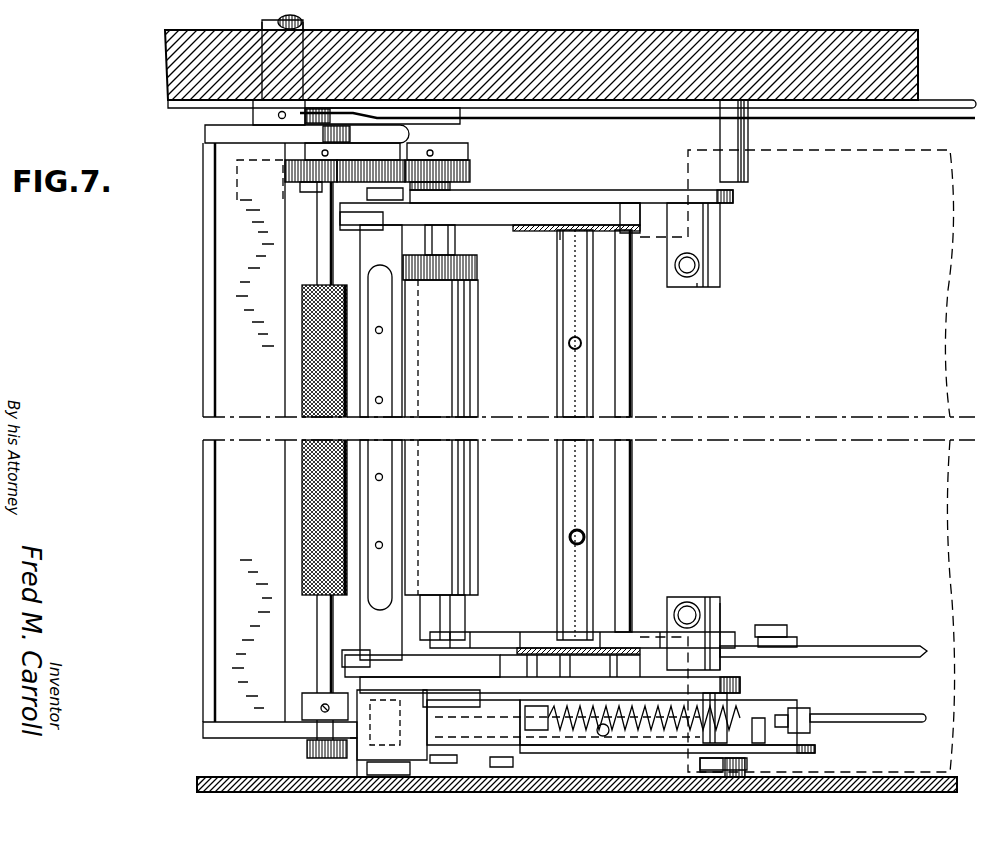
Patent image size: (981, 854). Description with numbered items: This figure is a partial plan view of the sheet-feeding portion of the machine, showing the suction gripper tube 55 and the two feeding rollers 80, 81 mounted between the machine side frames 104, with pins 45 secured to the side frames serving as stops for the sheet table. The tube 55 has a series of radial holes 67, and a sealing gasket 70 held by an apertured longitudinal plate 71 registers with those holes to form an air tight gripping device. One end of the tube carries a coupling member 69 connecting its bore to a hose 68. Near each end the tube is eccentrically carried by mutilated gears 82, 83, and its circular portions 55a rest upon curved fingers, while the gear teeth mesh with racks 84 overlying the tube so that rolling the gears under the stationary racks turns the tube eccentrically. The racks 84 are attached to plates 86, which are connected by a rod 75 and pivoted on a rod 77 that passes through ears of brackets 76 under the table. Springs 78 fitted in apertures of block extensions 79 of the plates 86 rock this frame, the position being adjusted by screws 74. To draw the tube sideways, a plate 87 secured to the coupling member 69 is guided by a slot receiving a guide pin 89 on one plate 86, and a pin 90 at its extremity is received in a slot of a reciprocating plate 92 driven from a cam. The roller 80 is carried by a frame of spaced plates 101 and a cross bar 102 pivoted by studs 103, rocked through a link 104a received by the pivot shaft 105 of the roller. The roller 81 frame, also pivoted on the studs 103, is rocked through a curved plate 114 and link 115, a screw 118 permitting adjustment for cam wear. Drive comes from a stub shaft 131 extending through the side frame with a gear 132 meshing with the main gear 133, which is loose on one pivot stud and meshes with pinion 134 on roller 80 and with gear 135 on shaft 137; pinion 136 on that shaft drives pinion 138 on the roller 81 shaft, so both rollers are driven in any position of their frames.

The pins 45 is at (750, 172).
The suction gripper tube 55 is at (333, 270).
The circular portions 55a is at (365, 195).
The radial holes 67 is at (383, 398).
The hose 68 is at (577, 733).
The coupling member 69 is at (528, 725).
The sealing gasket 70 is at (377, 268).
The longitudinal plate 71 is at (380, 308).
The screws 74 is at (568, 343).
The rod 75 is at (567, 377).
The brackets 76 is at (560, 235).
The rod 77 is at (632, 347).
The springs 78 is at (695, 260).
The block extensions 79 is at (697, 283).
The roller 80 is at (310, 543).
The roller 81 is at (457, 490).
The mutilated gear 82 is at (345, 222).
The mutilated gear 83 is at (345, 660).
The racks 84 is at (512, 205).
The plates 86 is at (553, 205).
The plate 87 is at (642, 750).
The guide pin 89 is at (728, 700).
The pin 90 is at (800, 710).
The plate 92 is at (863, 718).
The spaced plates 101 is at (238, 133).
The cross bar 102 is at (212, 592).
The pivot studs 103 is at (357, 100).
The machine side frames 104 is at (187, 88).
The link 104a is at (632, 118).
The pivot shaft 105 is at (327, 257).
The curved plate 114 is at (510, 640).
The link 115 is at (820, 648).
The screw 118 is at (775, 627).
The stub shaft 131 is at (303, 22).
The gear 132 is at (230, 187).
The gear 133 is at (387, 167).
The pinion 134 is at (315, 172).
The gear 135 is at (472, 170).
The pinion 136 is at (455, 248).
The shaft 137 is at (468, 127).
The pinion 138 is at (478, 268).